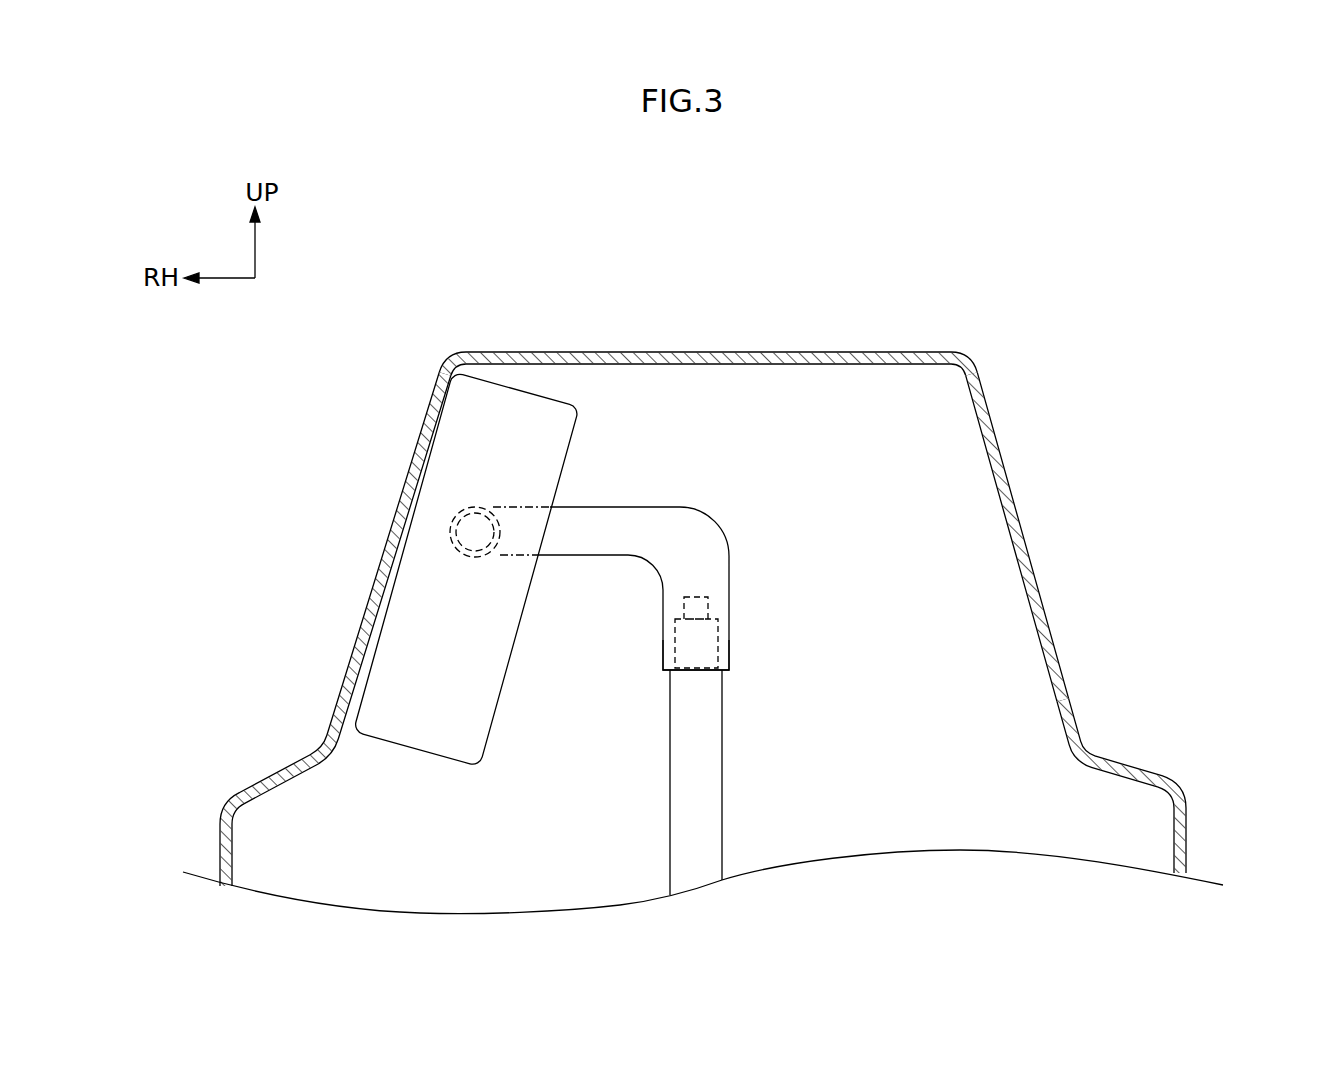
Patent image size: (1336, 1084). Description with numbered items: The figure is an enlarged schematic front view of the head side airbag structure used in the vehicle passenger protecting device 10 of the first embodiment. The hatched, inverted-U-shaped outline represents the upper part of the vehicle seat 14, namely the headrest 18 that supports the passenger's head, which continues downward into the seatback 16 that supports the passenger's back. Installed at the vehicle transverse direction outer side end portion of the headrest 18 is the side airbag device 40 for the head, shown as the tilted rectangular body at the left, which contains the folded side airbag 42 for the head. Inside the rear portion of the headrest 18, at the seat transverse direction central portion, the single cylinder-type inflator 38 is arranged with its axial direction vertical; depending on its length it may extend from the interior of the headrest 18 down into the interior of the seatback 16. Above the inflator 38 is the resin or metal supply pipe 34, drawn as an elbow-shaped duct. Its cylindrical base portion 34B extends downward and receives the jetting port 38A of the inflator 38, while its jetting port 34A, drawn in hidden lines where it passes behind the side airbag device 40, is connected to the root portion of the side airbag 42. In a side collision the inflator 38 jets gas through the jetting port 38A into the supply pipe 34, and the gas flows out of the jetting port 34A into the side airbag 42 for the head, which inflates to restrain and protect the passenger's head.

The vehicle passenger protecting device 10 is at (503, 344).
The vehicle seat 14 is at (1010, 469).
The seatback 16 is at (1188, 828).
The headrest 18 is at (968, 352).
The supply pipe 34 is at (723, 533).
The jetting port of the supply pipe 34A is at (462, 511).
The base portion of the supply pipe 34B is at (731, 648).
The inflator 38 is at (725, 795).
The jetting port of the inflator 38A is at (708, 607).
The side airbag device for the head 40 is at (572, 432).
The side airbag for the head 42 is at (487, 690).